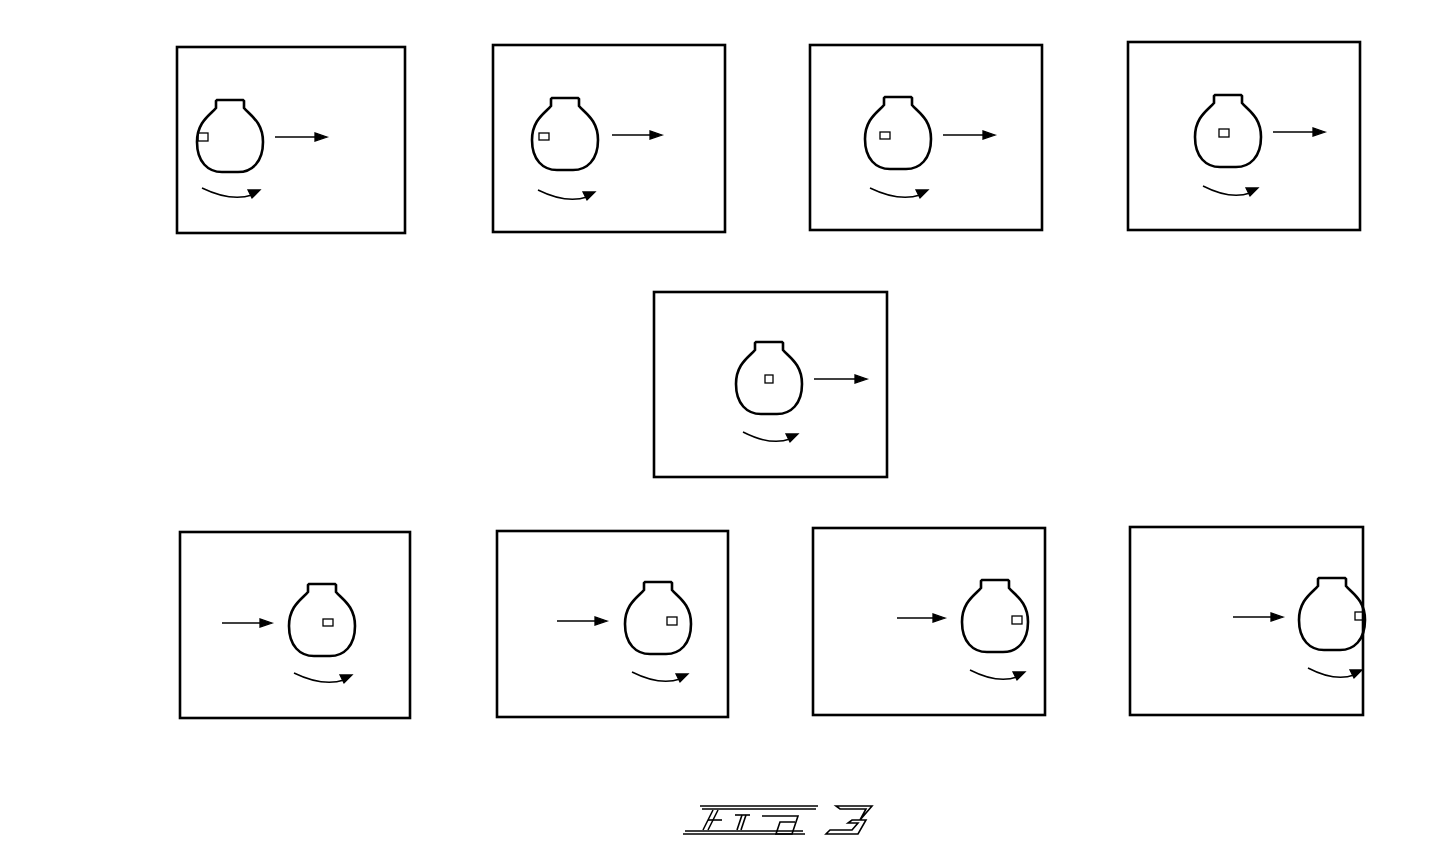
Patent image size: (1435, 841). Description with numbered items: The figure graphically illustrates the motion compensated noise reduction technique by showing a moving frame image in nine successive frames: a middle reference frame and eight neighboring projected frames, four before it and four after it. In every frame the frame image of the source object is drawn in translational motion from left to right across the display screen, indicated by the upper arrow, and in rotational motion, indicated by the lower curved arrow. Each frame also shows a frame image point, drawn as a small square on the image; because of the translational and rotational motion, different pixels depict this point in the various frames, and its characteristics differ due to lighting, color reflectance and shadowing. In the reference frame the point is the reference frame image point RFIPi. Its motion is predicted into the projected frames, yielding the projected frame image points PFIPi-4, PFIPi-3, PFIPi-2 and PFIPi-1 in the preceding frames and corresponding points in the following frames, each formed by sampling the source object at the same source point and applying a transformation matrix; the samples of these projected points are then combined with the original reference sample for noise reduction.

The projected frame image point PFIPi-4 is at (198, 137).
The projected frame image point PFIPi-3 is at (540, 136).
The projected frame image point PFIPi-2 is at (880, 135).
The projected frame image point PFIPi-1 is at (1219, 133).
The reference frame image point RFIPi is at (765, 379).